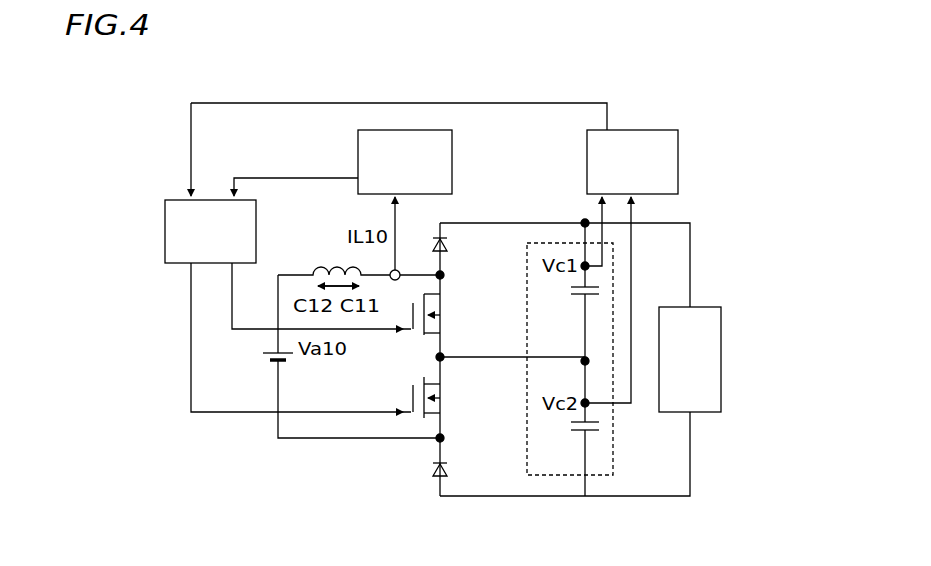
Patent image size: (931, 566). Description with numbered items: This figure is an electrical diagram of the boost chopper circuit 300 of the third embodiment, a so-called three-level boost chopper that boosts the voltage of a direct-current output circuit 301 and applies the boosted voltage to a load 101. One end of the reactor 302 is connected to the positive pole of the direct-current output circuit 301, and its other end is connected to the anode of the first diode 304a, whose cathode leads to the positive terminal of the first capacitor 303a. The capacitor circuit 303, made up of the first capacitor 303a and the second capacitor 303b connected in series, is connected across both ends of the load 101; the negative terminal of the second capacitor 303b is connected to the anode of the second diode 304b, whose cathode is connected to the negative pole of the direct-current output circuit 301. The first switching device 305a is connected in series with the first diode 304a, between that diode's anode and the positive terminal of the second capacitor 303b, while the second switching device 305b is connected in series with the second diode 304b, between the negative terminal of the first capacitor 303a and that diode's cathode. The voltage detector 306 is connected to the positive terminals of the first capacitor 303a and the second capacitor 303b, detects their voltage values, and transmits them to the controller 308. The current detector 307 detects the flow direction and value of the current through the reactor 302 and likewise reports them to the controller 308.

The boost chopper circuit 300 is at (154, 108).
The current detector 307 is at (400, 130).
The voltage detector 306 is at (631, 130).
The controller 308 is at (165, 218).
The reactor 302 is at (322, 270).
The direct-current output circuit 301 is at (273, 362).
The first diode 304a is at (447, 242).
The second diode 304b is at (447, 465).
The first switching device 305a is at (481, 306).
The second switching device 305b is at (448, 399).
The first capacitor 303a is at (575, 297).
The second capacitor 303b is at (578, 436).
The capacitor circuit 303 is at (615, 428).
The load 101 is at (721, 355).